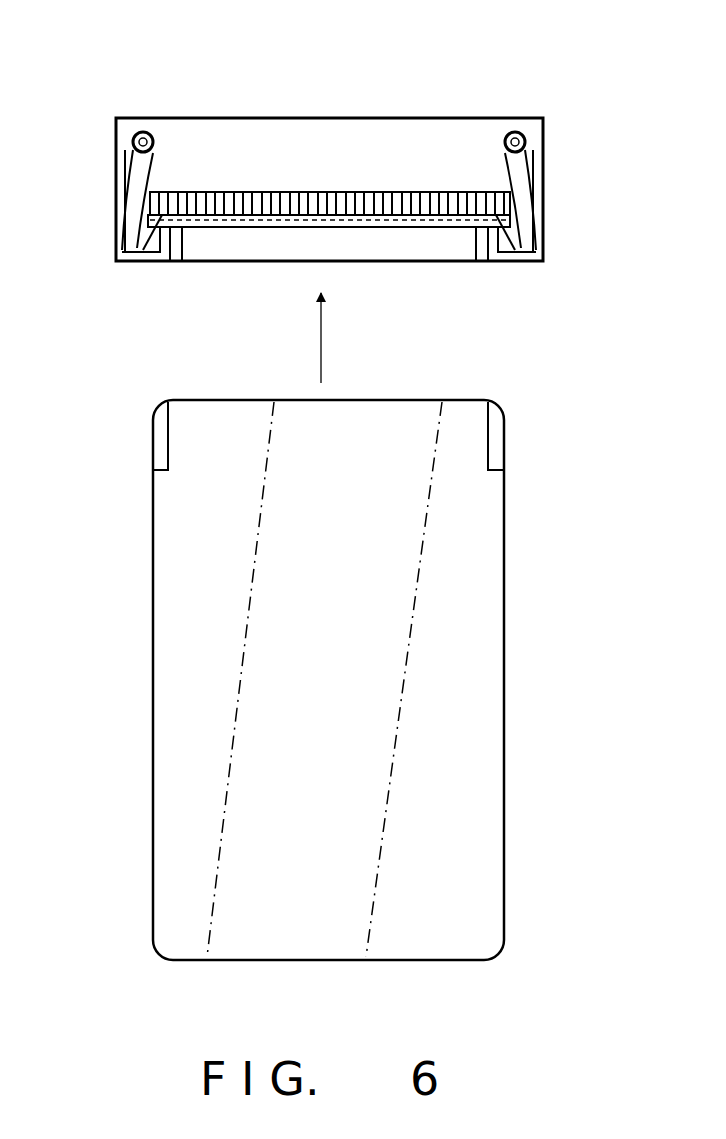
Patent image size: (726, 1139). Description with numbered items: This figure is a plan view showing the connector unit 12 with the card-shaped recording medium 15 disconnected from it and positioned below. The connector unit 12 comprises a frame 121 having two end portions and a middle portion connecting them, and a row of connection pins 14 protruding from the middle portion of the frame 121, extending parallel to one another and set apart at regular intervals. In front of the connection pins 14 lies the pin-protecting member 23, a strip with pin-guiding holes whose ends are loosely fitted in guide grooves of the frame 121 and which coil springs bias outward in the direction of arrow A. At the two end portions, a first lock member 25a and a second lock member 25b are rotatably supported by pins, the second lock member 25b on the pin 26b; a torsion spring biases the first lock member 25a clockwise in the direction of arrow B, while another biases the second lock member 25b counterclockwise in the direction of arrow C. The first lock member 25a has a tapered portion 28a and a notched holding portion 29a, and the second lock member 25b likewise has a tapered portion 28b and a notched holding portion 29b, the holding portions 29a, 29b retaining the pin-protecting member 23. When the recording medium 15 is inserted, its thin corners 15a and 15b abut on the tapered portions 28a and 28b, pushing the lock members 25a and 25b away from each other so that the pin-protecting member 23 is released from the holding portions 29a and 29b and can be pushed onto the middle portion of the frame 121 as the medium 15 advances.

The connector unit 12 is at (384, 33).
The frame 121 is at (425, 118).
The connection pins 14 is at (298, 200).
The pin-protecting member 23 is at (387, 227).
The pin 26b is at (145, 132).
The second lock member 25b is at (140, 163).
The first lock member 25a is at (518, 180).
The holding portion 29b is at (150, 232).
The holding portion 29a is at (520, 263).
The tapered portion 28b is at (158, 230).
The tapered portion 28a is at (490, 232).
The card-shaped recording medium 15 is at (334, 680).
The thin corner 15a is at (492, 448).
The thin corner 15b is at (160, 442).
The arrow A is at (173, 203).
The arrow B is at (572, 182).
The arrow C is at (120, 218).